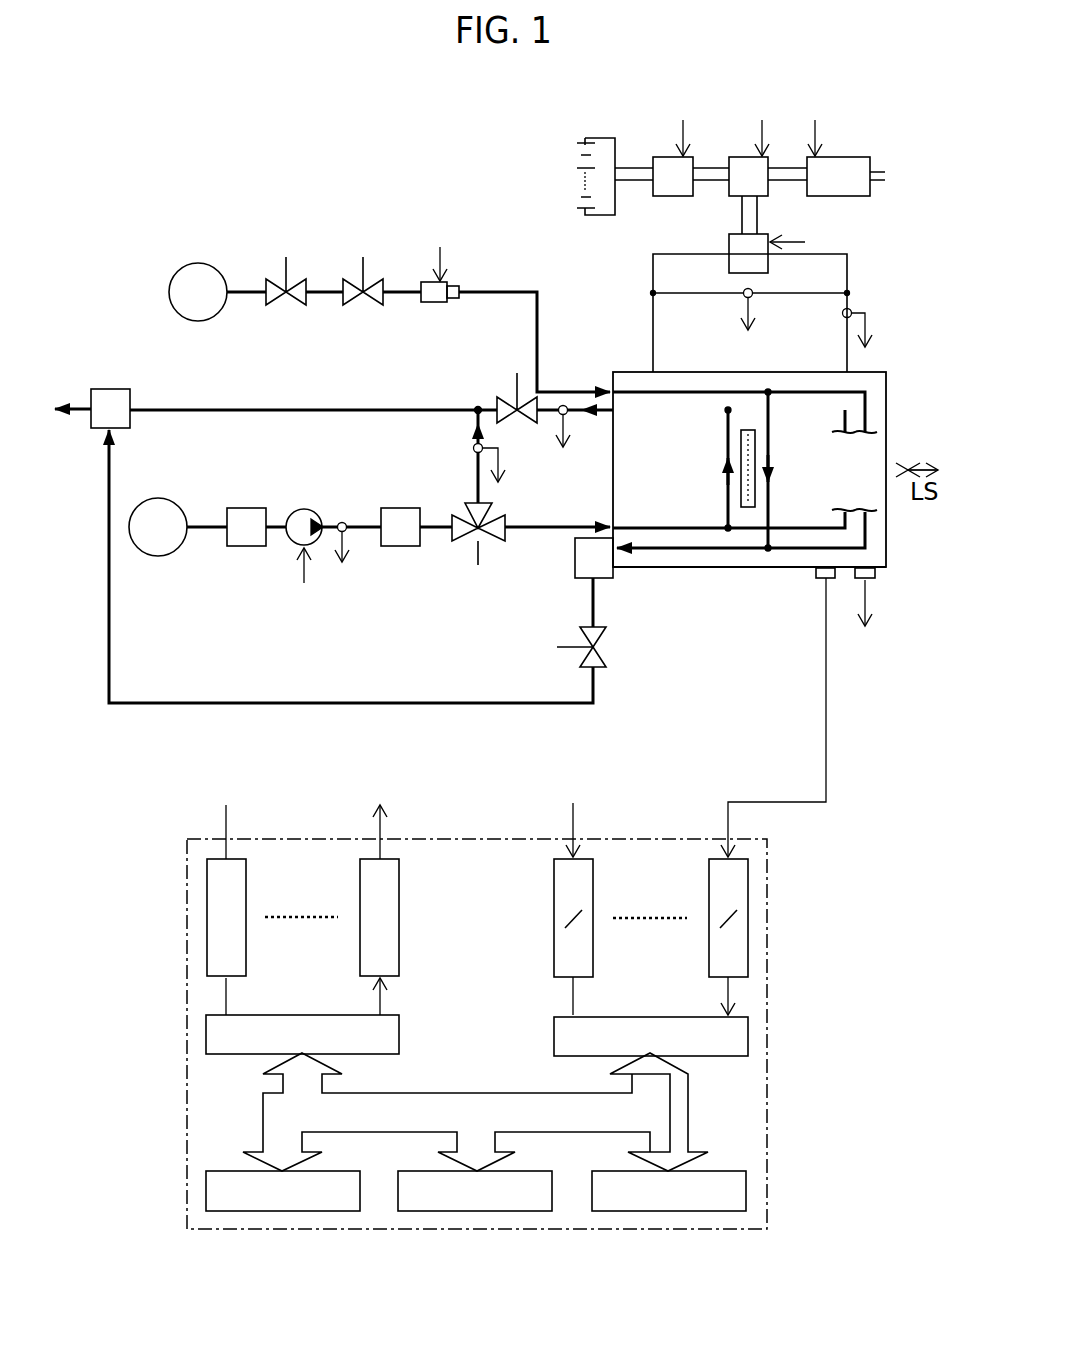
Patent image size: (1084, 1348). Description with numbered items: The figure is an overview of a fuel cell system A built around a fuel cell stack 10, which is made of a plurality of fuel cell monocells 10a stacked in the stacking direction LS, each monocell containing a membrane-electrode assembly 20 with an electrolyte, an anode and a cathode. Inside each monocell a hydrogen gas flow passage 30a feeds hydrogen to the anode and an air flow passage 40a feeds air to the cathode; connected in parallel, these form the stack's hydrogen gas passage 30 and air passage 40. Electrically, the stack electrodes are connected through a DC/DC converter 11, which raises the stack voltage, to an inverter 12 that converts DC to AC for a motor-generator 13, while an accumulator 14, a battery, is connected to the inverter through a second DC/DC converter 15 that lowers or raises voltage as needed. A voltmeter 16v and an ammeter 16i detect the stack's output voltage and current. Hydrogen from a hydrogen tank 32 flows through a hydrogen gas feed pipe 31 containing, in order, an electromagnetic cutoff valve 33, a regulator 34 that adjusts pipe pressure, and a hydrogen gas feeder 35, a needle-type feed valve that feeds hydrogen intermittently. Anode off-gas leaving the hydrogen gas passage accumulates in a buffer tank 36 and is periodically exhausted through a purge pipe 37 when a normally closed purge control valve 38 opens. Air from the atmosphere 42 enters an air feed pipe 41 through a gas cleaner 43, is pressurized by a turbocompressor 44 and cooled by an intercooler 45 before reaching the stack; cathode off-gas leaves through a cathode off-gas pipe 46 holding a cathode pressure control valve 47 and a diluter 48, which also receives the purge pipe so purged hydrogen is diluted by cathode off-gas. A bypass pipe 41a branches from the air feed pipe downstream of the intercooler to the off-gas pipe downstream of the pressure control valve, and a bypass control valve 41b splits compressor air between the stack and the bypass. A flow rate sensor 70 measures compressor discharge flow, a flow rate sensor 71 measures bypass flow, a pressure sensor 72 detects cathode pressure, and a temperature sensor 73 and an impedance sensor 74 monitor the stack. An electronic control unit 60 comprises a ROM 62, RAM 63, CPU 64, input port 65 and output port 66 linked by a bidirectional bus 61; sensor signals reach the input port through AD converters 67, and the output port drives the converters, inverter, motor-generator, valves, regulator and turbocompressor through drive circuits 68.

The fuel cell system A is at (172, 158).
The fuel cell stack 10 is at (888, 390).
The fuel cell monocell 10a is at (760, 580).
The DC/DC converter 11 is at (729, 250).
The inverter 12 is at (746, 157).
The motor-generator 13 is at (866, 157).
The accumulator 14 is at (575, 150).
The DC/DC converter 15 is at (670, 157).
The voltmeter 16v is at (744, 291).
The ammeter 16i is at (853, 312).
The membrane-electrode assembly 20 is at (747, 510).
The hydrogen gas passage 30 is at (806, 400).
The hydrogen gas flow passage 30a is at (769, 390).
The hydrogen gas feed pipe 31 is at (520, 291).
The hydrogen tank 32 is at (190, 266).
The cutoff valve 33 is at (268, 278).
The regulator 34 is at (345, 278).
The hydrogen gas feeder 35 is at (422, 282).
The buffer tank 36 is at (615, 577).
The purge pipe 37 is at (593, 690).
The purge control valve 38 is at (607, 660).
The air passage 40 is at (670, 420).
The air flow passage 40a is at (728, 406).
The air feed pipe 41 is at (208, 530).
The bypass pipe 41a is at (472, 495).
The bypass control valve 41b is at (455, 543).
The atmosphere 42 is at (148, 553).
The gas cleaner 43 is at (247, 546).
The turbocompressor 44 is at (292, 543).
The intercooler 45 is at (393, 546).
The cathode off-gas pipe 46 is at (380, 409).
The cathode pressure control valve 47 is at (499, 398).
The diluter 48 is at (108, 389).
The electronic control unit 60 is at (187, 905).
The bidirectional bus 61 is at (479, 1093).
The ROM 62 is at (340, 1211).
The RAM 63 is at (532, 1211).
The CPU 64 is at (726, 1211).
The input port 65 is at (554, 1035).
The output port 66 is at (400, 1035).
The AD converters 67 is at (709, 878).
The drive circuits 68 is at (360, 878).
The flow rate sensor 70 is at (340, 522).
The flow rate sensor 71 is at (474, 447).
The pressure sensor 72 is at (559, 415).
The temperature sensor 73 is at (877, 578).
The impedance sensor 74 is at (828, 580).